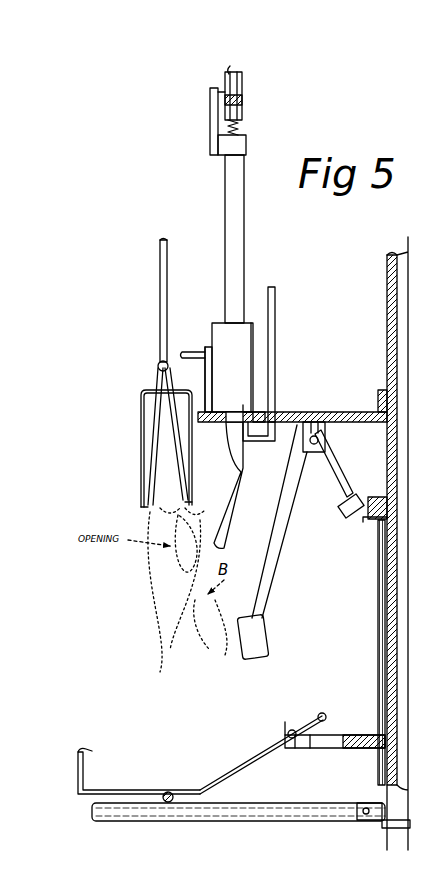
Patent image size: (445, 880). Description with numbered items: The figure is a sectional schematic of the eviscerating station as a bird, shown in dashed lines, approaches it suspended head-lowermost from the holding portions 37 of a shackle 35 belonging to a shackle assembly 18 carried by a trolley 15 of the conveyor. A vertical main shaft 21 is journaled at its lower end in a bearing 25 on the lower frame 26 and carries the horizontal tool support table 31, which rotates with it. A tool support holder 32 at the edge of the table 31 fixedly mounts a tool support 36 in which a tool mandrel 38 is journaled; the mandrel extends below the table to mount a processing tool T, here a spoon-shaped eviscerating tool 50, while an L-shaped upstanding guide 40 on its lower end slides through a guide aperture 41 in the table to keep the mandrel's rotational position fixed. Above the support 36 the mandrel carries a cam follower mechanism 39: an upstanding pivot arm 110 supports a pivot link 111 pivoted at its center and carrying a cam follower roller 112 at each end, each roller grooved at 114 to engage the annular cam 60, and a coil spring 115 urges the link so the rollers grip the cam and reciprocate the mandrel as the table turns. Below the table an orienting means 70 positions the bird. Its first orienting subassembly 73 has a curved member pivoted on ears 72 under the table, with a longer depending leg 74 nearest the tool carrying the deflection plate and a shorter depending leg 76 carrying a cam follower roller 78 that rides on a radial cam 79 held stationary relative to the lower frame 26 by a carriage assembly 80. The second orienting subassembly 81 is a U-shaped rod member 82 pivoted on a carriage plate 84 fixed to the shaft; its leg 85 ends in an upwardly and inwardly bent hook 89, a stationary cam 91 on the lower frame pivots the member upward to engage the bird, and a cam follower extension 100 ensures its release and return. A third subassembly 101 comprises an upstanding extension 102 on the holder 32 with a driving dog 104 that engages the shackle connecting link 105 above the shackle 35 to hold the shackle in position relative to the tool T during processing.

The trolley 15 is at (268, 633).
The shackle assembly 18 is at (160, 282).
The main shaft 21 is at (387, 299).
The bearing 25 is at (376, 822).
The lower frame 26 is at (288, 814).
The tool support table 31 is at (345, 412).
The tool support holder 32 is at (256, 411).
The shackle 35 is at (141, 410).
The tool support 36 is at (253, 330).
The holding portion 37 is at (143, 507).
The tool mandrel 38 is at (240, 183).
The cam follower mechanism 39 is at (210, 118).
The L-shaped upstanding guide 40 is at (272, 287).
The guide aperture 41 is at (286, 412).
The spoon-shaped eviscerating tool 50 is at (246, 480).
The annular cam 60 is at (240, 100).
The orienting means 70 is at (125, 694).
The ear 72 is at (314, 449).
The first orienting subassembly 73 is at (284, 578).
The longer depending leg 74 is at (287, 527).
The shorter depending leg 76 is at (342, 471).
The cam follower roller 78 is at (341, 504).
The radial cam 79 is at (370, 522).
The carriage assembly 80 is at (385, 600).
The second orienting subassembly 81 is at (324, 728).
The U-shaped rod member 82 is at (226, 768).
The carriage plate 84 is at (315, 748).
The leg 85 is at (112, 788).
The hook 89 is at (92, 751).
The stationary cam 91 is at (170, 792).
The cam follower extension 100 is at (304, 720).
The third subassembly 101 is at (206, 335).
The upstanding extension 102 is at (209, 368).
The driving dog 104 is at (200, 348).
The shackle connecting link 105 is at (158, 245).
The pivot arm 110 is at (216, 146).
The pivot link 111 is at (218, 95).
The cam follower roller 112 is at (242, 80).
The groove 114 is at (229, 72).
The coil spring 115 is at (239, 129).
The processing tool T is at (230, 530).